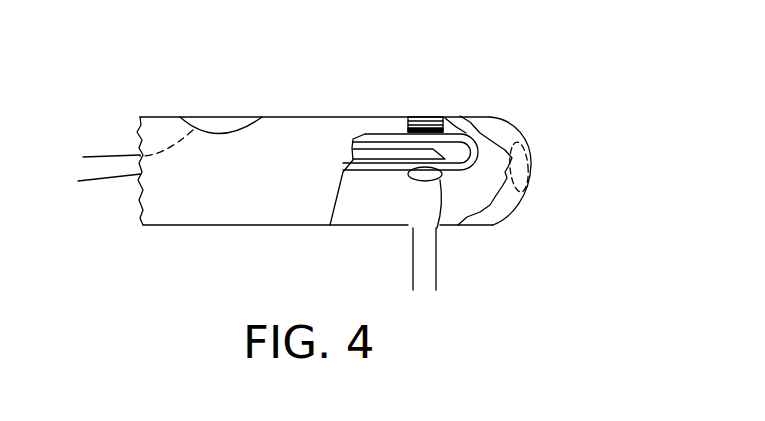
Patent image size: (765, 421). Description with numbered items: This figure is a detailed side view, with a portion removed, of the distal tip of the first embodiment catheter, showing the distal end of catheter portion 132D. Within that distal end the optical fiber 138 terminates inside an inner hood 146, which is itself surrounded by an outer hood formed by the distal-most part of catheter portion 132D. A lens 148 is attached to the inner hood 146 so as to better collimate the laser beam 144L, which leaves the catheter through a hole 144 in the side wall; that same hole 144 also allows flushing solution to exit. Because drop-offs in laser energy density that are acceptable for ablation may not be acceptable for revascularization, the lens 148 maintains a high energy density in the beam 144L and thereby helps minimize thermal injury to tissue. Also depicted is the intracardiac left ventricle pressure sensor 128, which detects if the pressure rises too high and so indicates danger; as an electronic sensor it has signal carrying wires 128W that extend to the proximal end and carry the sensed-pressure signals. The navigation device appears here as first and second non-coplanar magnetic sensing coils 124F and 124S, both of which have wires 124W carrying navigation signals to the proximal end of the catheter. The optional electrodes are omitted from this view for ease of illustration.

The intracardiac left ventricle pressure sensor 128 is at (219, 117).
The signal carrying wires 128W is at (99, 157).
The wires 124W is at (92, 182).
The distal end of catheter portion 132D is at (314, 117).
The second magnetic sensing coil 124S is at (443, 115).
The first magnetic sensing coil 124F is at (540, 156).
The lens 148 is at (437, 228).
The optical fiber 138 is at (377, 155).
The inner hood 146 is at (380, 180).
The hole 144 is at (408, 227).
The laser beam 144L is at (437, 277).